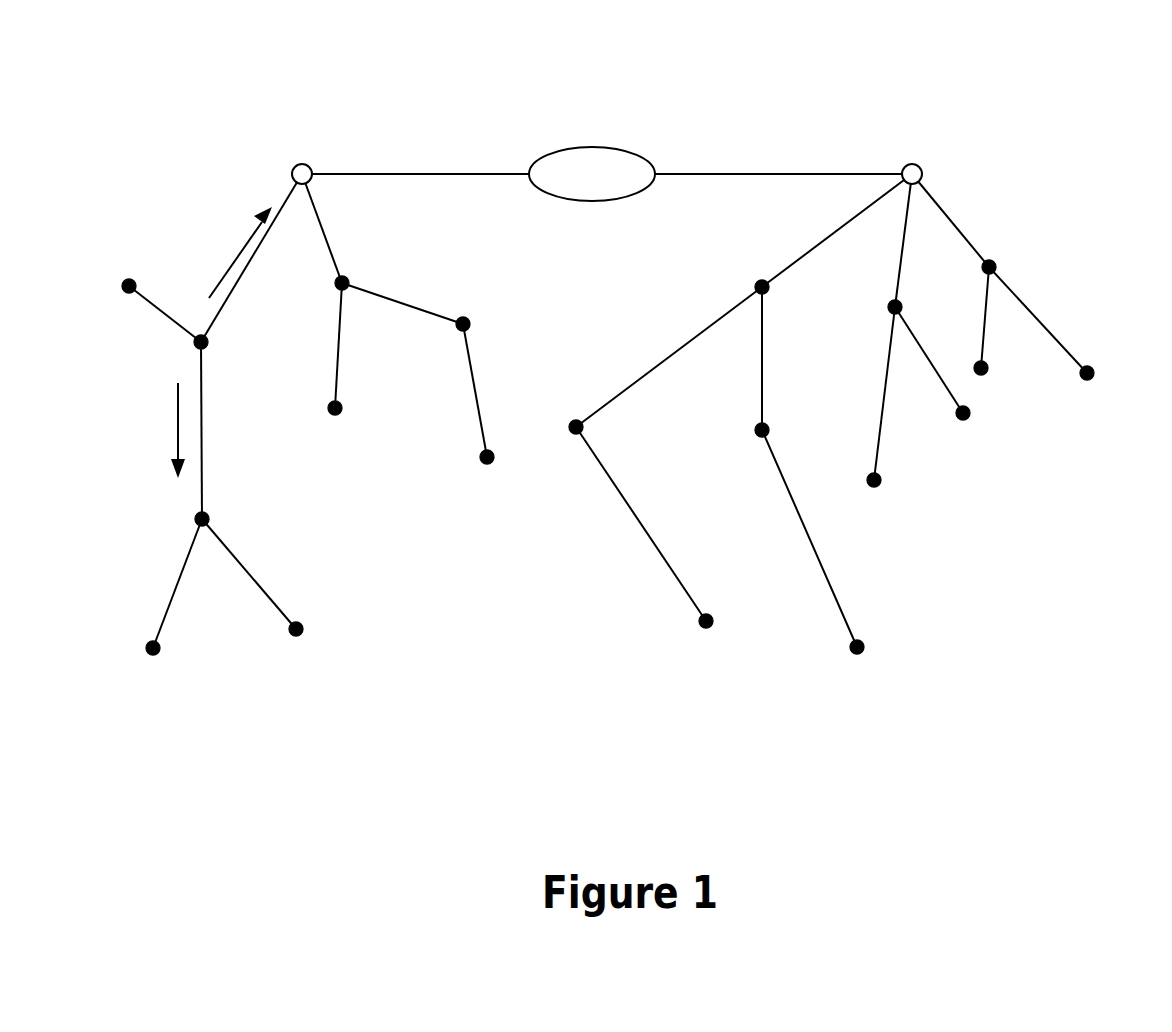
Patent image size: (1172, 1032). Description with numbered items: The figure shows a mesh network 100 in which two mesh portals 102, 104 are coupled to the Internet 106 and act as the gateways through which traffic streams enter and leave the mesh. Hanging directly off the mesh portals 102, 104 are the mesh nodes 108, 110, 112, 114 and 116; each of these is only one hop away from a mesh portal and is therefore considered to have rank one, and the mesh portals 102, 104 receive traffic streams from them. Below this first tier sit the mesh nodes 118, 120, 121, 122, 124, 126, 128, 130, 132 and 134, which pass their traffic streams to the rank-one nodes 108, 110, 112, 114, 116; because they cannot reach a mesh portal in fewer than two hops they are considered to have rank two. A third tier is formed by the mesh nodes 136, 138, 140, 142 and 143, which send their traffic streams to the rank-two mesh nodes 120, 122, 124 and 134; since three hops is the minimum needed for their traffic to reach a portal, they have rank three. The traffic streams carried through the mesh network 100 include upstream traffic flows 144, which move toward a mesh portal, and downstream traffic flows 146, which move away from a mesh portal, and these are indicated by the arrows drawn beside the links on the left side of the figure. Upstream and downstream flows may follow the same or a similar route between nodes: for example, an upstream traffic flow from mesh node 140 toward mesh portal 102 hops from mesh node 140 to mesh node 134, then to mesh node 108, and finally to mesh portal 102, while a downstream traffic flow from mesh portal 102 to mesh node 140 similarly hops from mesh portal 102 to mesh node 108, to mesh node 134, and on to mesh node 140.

The mesh network 100 is at (843, 94).
The mesh portal 102 is at (322, 160).
The mesh portal 104 is at (929, 159).
The Internet 106 is at (567, 147).
The mesh node 108 is at (224, 349).
The mesh node 110 is at (366, 271).
The mesh node 112 is at (786, 292).
The mesh node 114 is at (920, 303).
The mesh node 116 is at (1018, 257).
The mesh node 118 is at (127, 272).
The mesh node 120 is at (489, 320).
The mesh node 121 is at (337, 425).
The mesh node 122 is at (602, 430).
The mesh node 124 is at (791, 430).
The mesh node 126 is at (900, 485).
The mesh node 128 is at (984, 425).
The mesh node 130 is at (1006, 374).
The mesh node 132 is at (1117, 379).
The mesh node 134 is at (225, 518).
The mesh node 136 is at (732, 628).
The mesh node 138 is at (886, 646).
The mesh node 140 is at (155, 665).
The mesh node 142 is at (298, 647).
The mesh node 143 is at (498, 475).
The upstream traffic flows 144 is at (234, 258).
The downstream traffic flows 146 is at (177, 418).